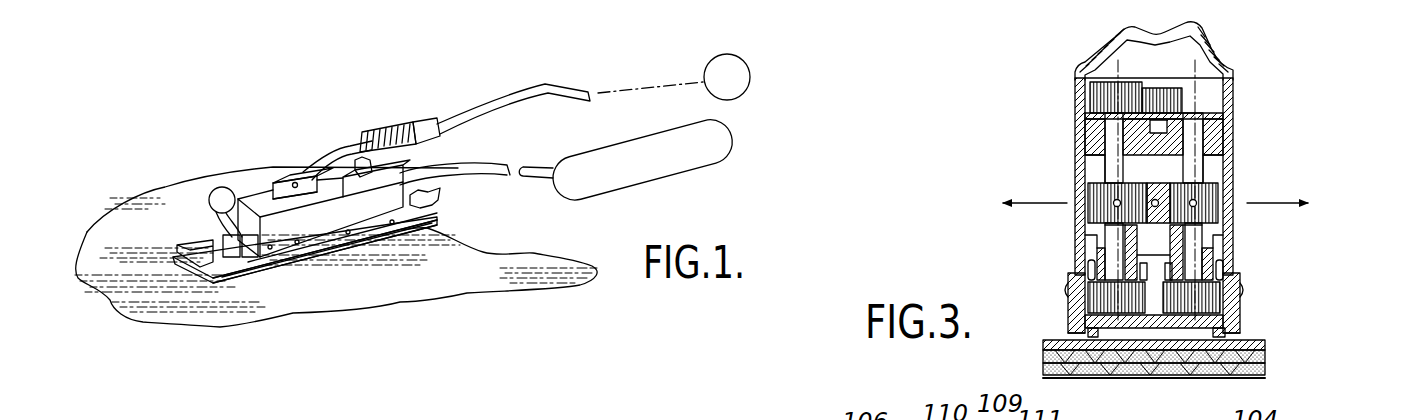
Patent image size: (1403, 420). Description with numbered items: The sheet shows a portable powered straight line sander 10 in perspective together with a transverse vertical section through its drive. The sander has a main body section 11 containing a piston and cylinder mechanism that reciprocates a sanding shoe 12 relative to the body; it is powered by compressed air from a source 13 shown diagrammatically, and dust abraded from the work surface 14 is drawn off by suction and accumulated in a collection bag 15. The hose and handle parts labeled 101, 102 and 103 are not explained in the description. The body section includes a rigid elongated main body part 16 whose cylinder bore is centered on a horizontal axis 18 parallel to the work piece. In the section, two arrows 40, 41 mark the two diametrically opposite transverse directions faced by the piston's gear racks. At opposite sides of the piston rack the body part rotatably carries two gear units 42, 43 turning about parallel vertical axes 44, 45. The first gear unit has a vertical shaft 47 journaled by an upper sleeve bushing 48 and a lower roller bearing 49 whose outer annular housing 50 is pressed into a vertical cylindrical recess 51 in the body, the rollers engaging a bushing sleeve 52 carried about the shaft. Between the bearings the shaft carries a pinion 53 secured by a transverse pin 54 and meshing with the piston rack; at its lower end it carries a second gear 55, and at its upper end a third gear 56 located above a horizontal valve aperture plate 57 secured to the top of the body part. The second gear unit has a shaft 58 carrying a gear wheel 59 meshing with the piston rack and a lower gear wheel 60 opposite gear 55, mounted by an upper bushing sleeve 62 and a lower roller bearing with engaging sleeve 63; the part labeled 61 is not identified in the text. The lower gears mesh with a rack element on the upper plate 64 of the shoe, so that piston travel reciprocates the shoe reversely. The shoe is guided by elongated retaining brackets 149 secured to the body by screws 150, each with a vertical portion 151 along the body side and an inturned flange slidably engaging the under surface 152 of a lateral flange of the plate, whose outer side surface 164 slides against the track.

In FIG. 1, the portable powered sander 10 is at (322, 133).
In FIG. 1, the main body section 11 is at (313, 218).
In FIG. 3, the main body section 11 is at (1282, 367).
In FIG. 1, the sanding shoe 12 is at (283, 260).
In FIG. 1, the source of pressurized fluid 13 is at (752, 80).
In FIG. 1, the work surface 14 is at (477, 262).
In FIG. 1, the collection bag 15 is at (677, 163).
In FIG. 1, the main body part 16 is at (358, 200).
In FIG. 3, the main body part 16 is at (1236, 142).
In FIG. 3, the axis 18 is at (1152, 185).
In FIG. 3, the arrow 40 is at (1048, 196).
In FIG. 3, the arrow 41 is at (1258, 196).
In FIG. 3, the first gear unit 42 is at (1100, 162).
In FIG. 3, the second gear unit 43 is at (1219, 168).
In FIG. 3, the vertical axis 44 is at (1123, 68).
In FIG. 3, the vertical axis 45 is at (1192, 70).
In FIG. 3, the vertical shaft 47 is at (1113, 235).
In FIG. 3, the upper bearing 48 is at (1103, 122).
In FIG. 3, the lower bearing 49 is at (1092, 268).
In FIG. 3, the outer annular housing 50 is at (1087, 262).
In FIG. 3, the vertical cylindrical recess 51 is at (1140, 252).
In FIG. 3, the bushing sleeve 52 is at (1090, 298).
In FIG. 3, the gear wheel or pinion 53 is at (1098, 216).
In FIG. 3, the transverse pin 54 is at (1114, 203).
In FIG. 3, the second gear 55 is at (1152, 300).
In FIG. 3, the third gear 56 is at (1098, 90).
In FIG. 3, the valve aperture plate 57 is at (1207, 112).
In FIG. 3, the shaft 58 is at (1192, 238).
In FIG. 3, the gear wheel 59 is at (1207, 214).
In FIG. 3, the lower gear wheel 60 is at (1210, 310).
In FIG. 3, the central hub 61 is at (1212, 137).
In FIG. 3, the upper bushing sleeve 62 is at (1227, 268).
In FIG. 3, the sleeve 63 is at (1223, 253).
In FIG. 3, the upper plate 64 is at (1240, 344).
In FIG. 1, the air hose 101 is at (480, 112).
In FIG. 1, the handle 102 is at (333, 147).
In FIG. 1, the handle mount 103 is at (273, 175).
In FIG. 1, the guiding and retaining bracket 149 is at (320, 238).
In FIG. 3, the guiding and retaining bracket 149 is at (1085, 315).
In FIG. 1, the screws 150 is at (270, 252).
In FIG. 3, the screws 150 is at (1242, 290).
In FIG. 3, the vertical portion 151 is at (1078, 340).
In FIG. 3, the under surface 152 is at (1075, 338).
In FIG. 3, the outer side surface 164 is at (1068, 333).